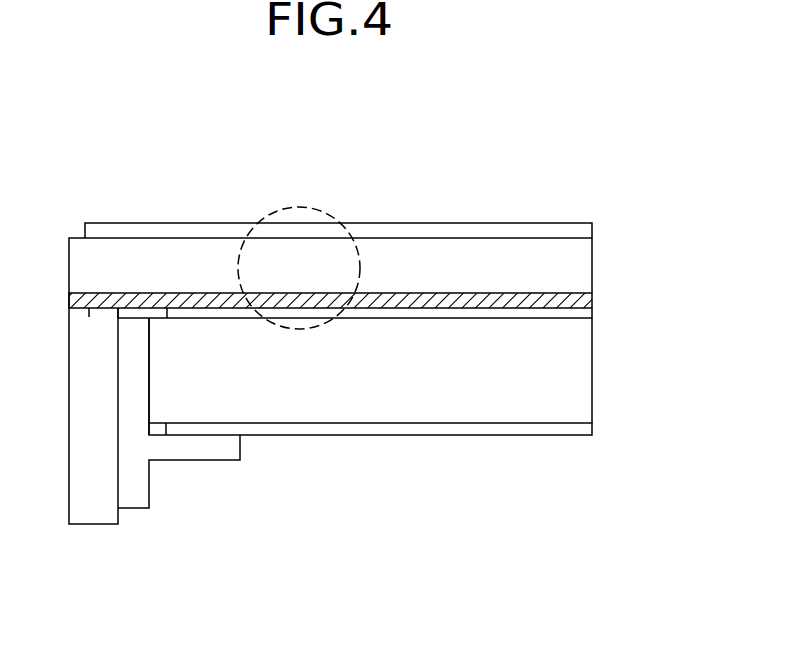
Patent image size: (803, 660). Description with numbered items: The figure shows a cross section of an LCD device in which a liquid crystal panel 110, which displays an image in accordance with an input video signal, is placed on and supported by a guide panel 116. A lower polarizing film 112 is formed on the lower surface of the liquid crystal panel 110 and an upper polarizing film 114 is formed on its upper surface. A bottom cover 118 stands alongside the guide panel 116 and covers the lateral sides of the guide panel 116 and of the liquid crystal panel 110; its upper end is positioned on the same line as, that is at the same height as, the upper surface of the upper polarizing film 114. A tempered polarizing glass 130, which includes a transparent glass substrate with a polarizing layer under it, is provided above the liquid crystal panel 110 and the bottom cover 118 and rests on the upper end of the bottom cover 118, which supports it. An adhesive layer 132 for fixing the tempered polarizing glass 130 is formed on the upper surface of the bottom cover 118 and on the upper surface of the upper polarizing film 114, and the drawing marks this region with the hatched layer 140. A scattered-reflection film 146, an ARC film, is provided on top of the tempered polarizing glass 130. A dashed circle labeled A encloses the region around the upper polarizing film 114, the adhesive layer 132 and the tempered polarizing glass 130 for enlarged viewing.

The liquid crystal panel 110 is at (582, 371).
The lower polarizing film 112 is at (582, 429).
The upper polarizing film 114 is at (582, 314).
The guide panel 116 is at (138, 508).
The bottom cover 118 is at (97, 524).
The tempered polarizing glass 130 is at (582, 260).
The adhesive layer 132 is at (177, 310).
The adhesive layer 140 is at (584, 298).
The scattered-reflection film 146 is at (583, 230).
The enlarged region A is at (297, 208).